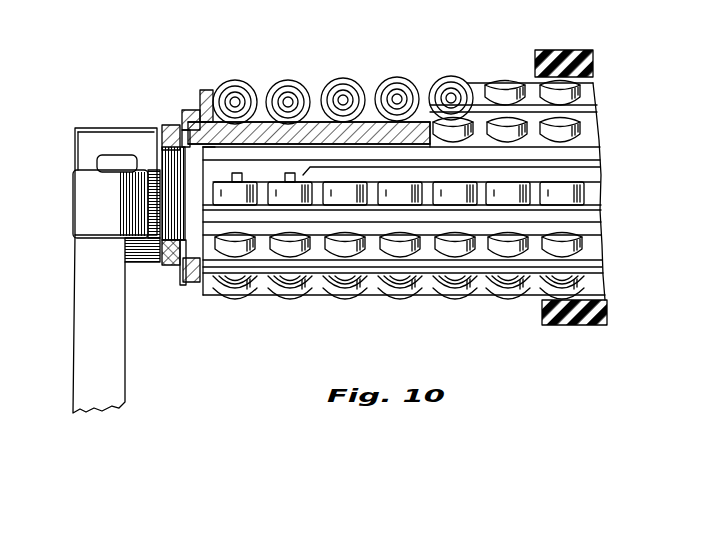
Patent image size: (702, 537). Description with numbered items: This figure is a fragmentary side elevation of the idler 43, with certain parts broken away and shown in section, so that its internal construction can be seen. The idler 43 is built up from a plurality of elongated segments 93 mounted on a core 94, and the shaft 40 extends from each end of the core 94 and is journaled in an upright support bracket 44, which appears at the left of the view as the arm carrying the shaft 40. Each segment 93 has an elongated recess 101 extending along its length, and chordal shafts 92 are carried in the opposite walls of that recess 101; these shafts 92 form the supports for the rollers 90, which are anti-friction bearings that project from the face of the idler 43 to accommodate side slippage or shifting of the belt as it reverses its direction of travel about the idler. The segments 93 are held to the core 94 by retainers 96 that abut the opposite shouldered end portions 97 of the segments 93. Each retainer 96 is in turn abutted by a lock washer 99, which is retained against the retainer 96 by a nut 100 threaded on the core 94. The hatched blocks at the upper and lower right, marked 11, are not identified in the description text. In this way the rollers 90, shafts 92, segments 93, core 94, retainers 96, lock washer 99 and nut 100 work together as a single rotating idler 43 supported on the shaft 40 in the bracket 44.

The housing 11 is at (572, 52).
The shaft 40 is at (73, 188).
The idler 43 is at (490, 65).
The upright support brackets 44 is at (78, 334).
The rollers 90 is at (343, 95).
The chordal shafts 92 is at (288, 100).
The elongated segments 93 is at (207, 90).
The core 94 is at (214, 185).
The retainers 96 is at (192, 283).
The shouldered end portions 97 is at (192, 112).
The lock washer 99 is at (183, 262).
The nut 100 is at (165, 128).
The elongated recess 101 is at (428, 88).